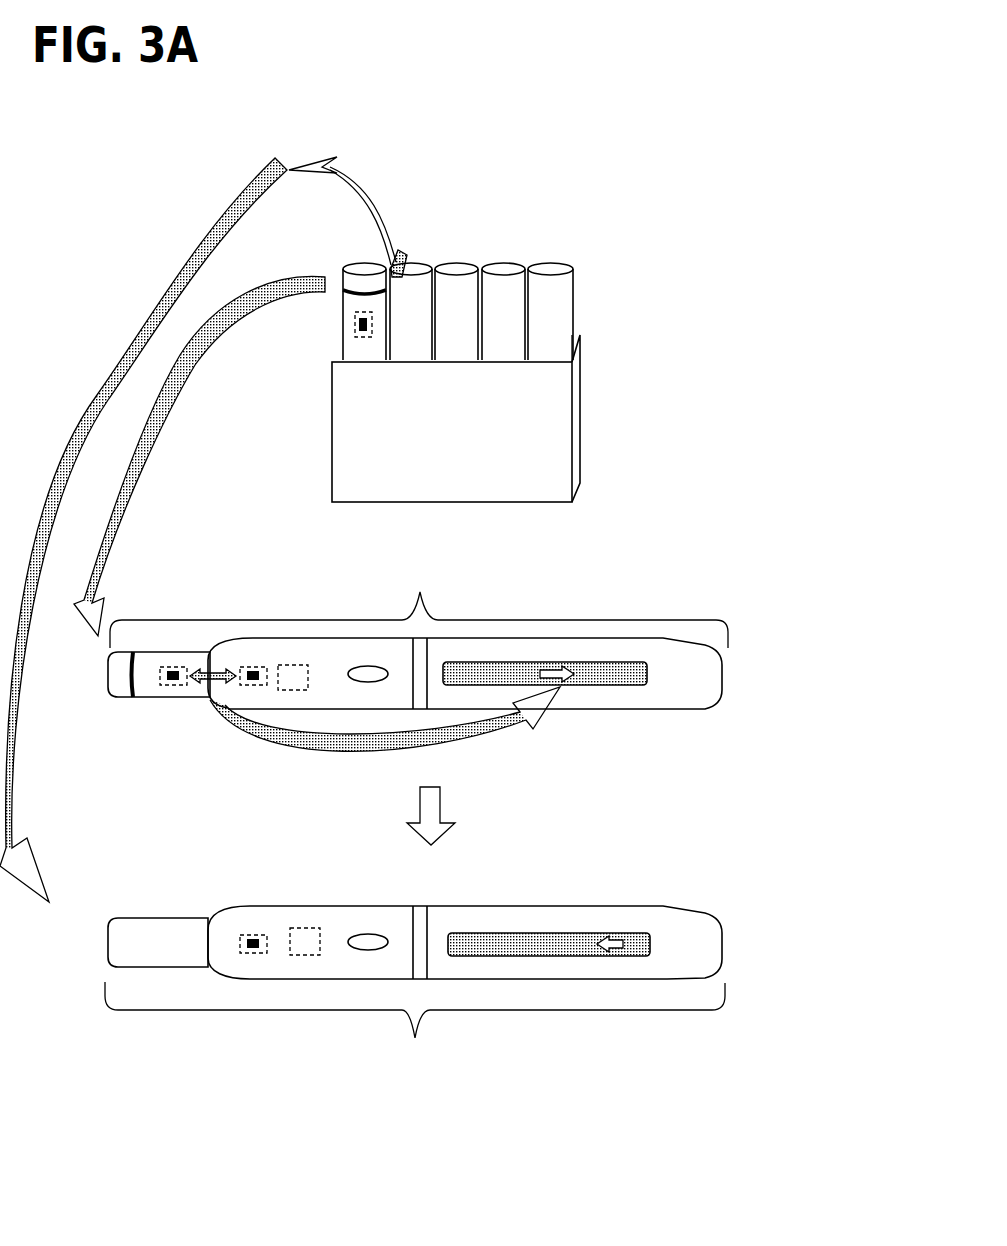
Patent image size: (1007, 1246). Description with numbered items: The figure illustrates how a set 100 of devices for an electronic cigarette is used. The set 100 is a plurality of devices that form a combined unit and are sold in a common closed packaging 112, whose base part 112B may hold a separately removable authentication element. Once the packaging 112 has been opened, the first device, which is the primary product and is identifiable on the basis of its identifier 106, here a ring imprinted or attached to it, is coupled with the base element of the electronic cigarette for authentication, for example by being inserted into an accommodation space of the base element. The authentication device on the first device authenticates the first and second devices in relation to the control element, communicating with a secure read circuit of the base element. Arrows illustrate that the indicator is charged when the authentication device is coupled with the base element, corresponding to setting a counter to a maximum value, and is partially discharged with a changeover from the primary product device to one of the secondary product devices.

The set of devices 100 is at (598, 277).
The identifier 106 is at (134, 652).
The packaging 112 is at (547, 408).
The base part of the packaging 112B is at (597, 400).